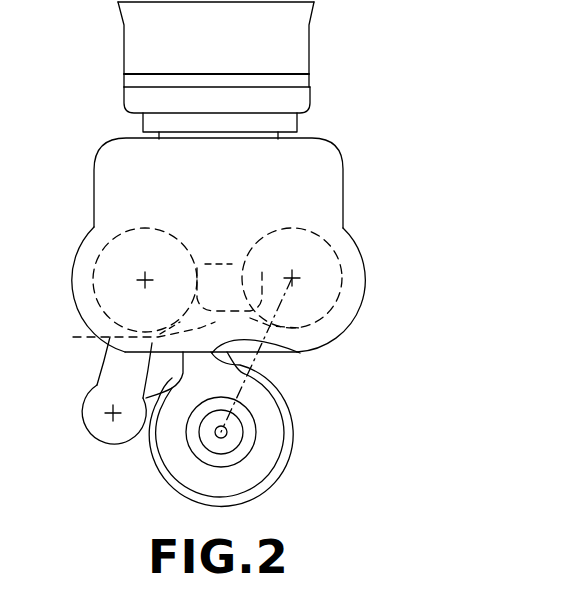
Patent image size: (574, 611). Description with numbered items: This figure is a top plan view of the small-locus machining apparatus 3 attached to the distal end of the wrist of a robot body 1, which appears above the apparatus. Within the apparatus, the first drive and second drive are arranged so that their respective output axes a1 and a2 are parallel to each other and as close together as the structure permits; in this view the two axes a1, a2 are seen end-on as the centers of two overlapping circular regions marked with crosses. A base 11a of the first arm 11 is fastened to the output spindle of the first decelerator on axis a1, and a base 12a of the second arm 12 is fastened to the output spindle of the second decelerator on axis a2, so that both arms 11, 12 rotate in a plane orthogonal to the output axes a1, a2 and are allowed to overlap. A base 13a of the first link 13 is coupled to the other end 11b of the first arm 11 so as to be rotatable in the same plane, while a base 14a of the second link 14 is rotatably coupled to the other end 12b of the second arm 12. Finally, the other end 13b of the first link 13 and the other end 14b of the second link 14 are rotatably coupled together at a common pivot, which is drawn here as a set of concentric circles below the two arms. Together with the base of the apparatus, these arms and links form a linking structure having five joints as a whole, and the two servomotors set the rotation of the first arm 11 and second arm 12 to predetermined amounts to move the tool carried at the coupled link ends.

The robot body 1 is at (316, 40).
The small-locus machining apparatus 3 is at (359, 235).
The first arm 11 is at (100, 374).
The base of the first arm 11a is at (97, 273).
The other end of the first arm 11b is at (95, 430).
The second arm 12 is at (235, 256).
The base of the second arm 12a is at (305, 228).
The other end of the second arm 12b is at (205, 258).
The first link 13 is at (291, 451).
The base of the first link 13a is at (138, 440).
The other end of the first link 13b is at (270, 484).
The second link 14 is at (292, 352).
The base of the second link 14a is at (123, 337).
The other end of the second link 14b is at (268, 408).
The output axis of the first drive a1 is at (145, 278).
The output axis of the second drive a2 is at (292, 278).